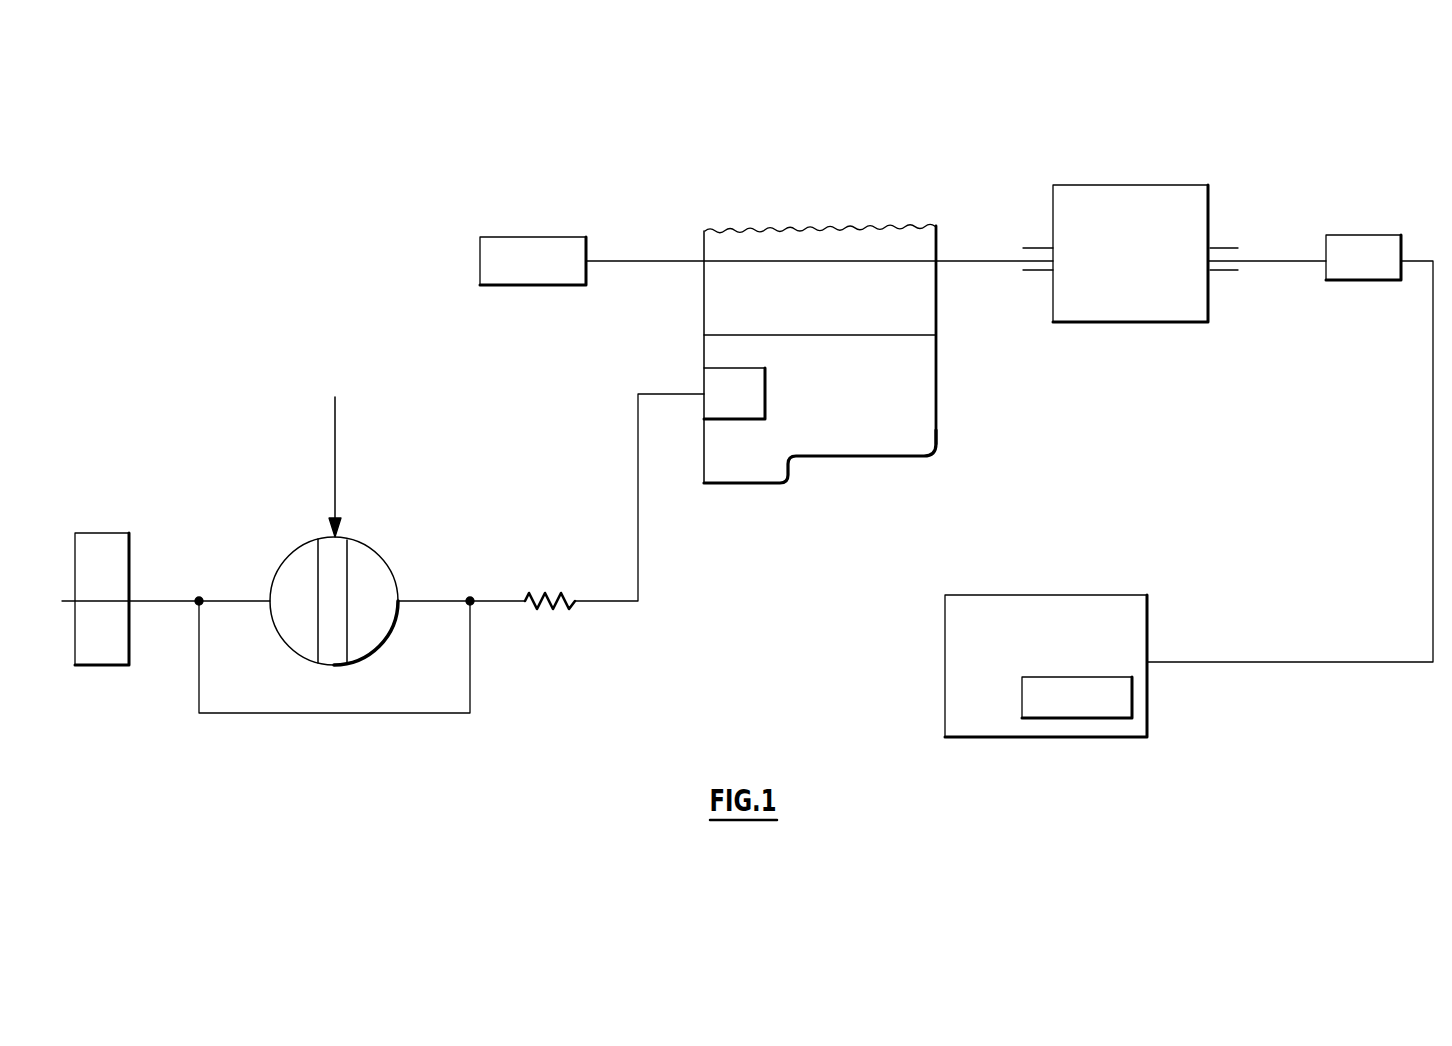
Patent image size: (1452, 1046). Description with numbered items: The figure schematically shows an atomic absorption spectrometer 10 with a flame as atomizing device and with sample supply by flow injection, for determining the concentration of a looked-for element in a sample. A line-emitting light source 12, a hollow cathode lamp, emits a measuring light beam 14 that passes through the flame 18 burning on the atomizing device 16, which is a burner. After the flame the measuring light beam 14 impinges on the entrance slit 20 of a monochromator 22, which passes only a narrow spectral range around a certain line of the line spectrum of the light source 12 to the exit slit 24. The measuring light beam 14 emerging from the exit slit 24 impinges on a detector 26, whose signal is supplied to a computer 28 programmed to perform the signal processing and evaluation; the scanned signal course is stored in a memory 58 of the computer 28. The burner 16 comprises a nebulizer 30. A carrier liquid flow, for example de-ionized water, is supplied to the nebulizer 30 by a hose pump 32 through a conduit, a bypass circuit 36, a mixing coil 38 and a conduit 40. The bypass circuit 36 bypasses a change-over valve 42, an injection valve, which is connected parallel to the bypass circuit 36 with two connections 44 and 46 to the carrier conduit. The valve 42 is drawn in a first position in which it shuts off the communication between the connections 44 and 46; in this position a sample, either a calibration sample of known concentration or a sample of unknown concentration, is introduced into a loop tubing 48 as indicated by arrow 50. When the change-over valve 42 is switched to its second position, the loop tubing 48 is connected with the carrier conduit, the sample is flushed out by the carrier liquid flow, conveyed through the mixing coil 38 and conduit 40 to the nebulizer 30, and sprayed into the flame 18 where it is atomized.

The atomic absorption spectrometer 10 is at (1110, 355).
The line-emitting light source 12 is at (500, 285).
The measuring light beam 14 is at (620, 265).
The atomizing device 16 is at (855, 442).
The flame 18 is at (870, 237).
The entrance slit 20 is at (1040, 243).
The monochromator 22 is at (1202, 297).
The exit slit 24 is at (1222, 243).
The detector 26 is at (1358, 233).
The computer 28 is at (973, 722).
The nebulizer 30 is at (715, 388).
The hose pump 32 is at (95, 665).
The bypass circuit 36 is at (415, 713).
The mixing coil 38 is at (538, 593).
The conduit 40 is at (613, 602).
The change-over valve 42 is at (365, 540).
The connection 44 is at (242, 598).
The connection 46 is at (432, 598).
The loop tubing 48 is at (278, 635).
The arrow 50 is at (337, 438).
The memory 58 is at (1102, 718).